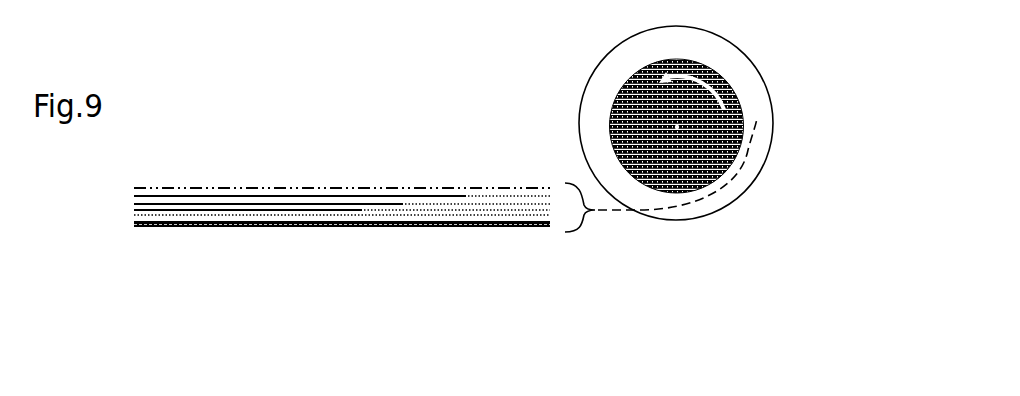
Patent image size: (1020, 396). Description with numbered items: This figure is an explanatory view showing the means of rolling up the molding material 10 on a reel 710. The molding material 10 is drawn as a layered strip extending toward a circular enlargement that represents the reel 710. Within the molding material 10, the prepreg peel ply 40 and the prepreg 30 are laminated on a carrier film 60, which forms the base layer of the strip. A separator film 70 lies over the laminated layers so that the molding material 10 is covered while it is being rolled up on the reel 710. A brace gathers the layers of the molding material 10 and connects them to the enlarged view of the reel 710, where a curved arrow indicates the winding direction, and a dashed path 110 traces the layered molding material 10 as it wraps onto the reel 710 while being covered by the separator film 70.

The molding material 10 is at (517, 146).
The prepreg 30 is at (321, 196).
The prepreg peel ply 40 is at (468, 206).
The carrier film 60 is at (310, 227).
The separator film 70 is at (512, 188).
The rotation path 110 is at (688, 203).
The reel 710 is at (617, 97).